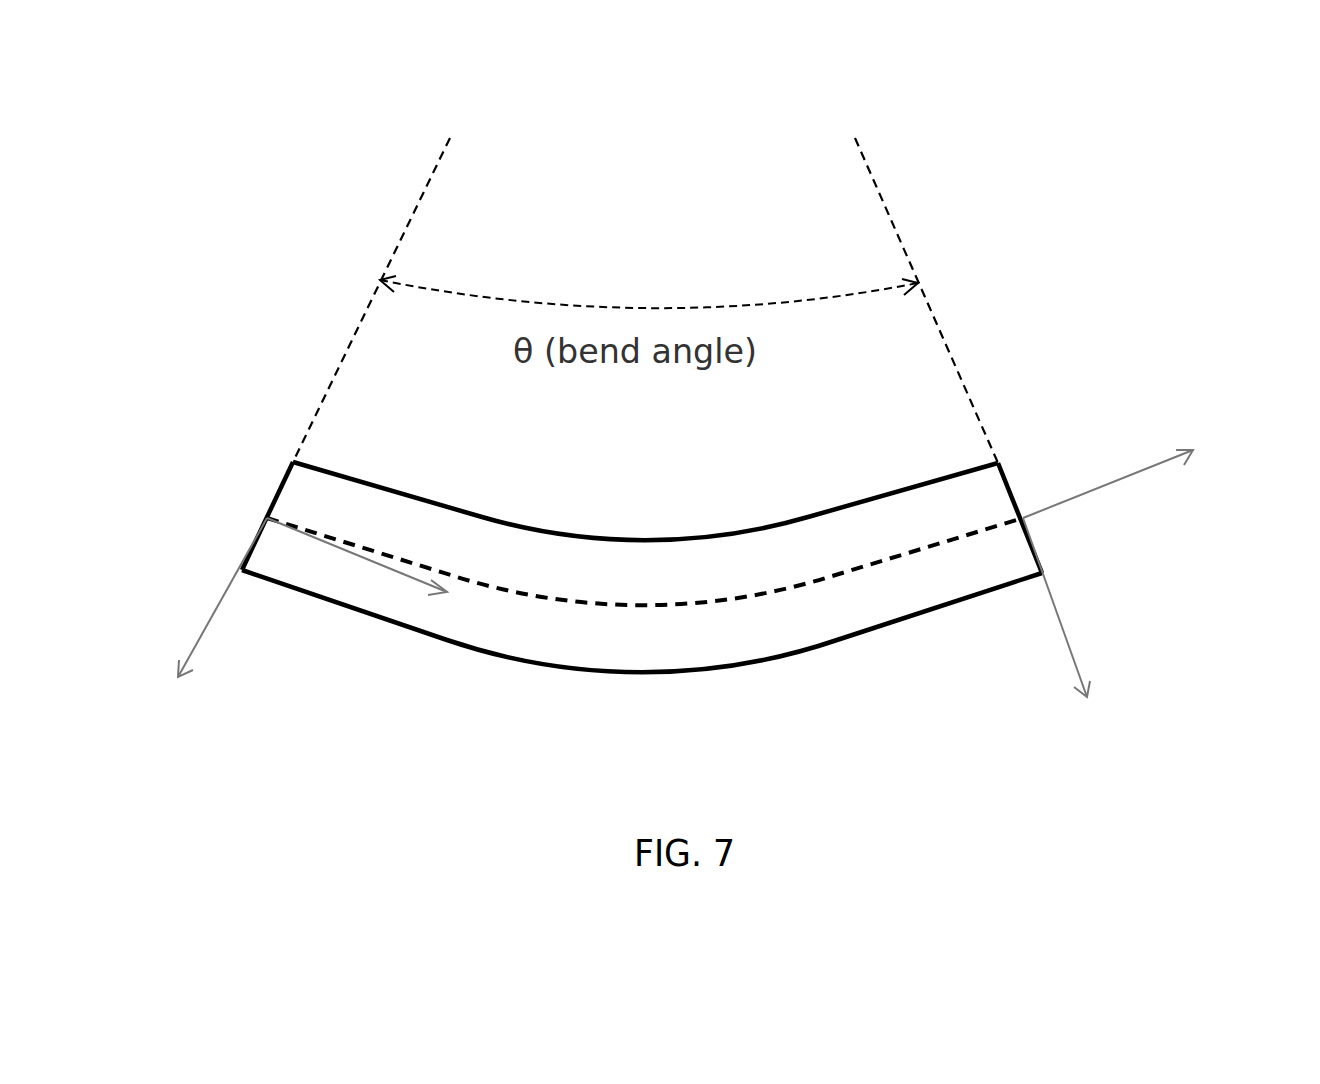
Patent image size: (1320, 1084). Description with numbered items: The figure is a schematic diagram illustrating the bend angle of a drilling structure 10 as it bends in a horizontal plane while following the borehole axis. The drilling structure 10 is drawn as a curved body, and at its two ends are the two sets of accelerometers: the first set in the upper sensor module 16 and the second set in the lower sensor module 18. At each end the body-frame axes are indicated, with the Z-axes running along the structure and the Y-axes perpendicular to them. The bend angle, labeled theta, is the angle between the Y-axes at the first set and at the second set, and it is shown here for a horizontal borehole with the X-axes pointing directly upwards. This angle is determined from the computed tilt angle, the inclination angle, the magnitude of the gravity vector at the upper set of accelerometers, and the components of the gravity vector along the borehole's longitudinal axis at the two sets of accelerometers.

The bendable body 10 is at (617, 667).
The upper sensor module 16 is at (248, 475).
The lower sensor module 18 is at (1040, 463).